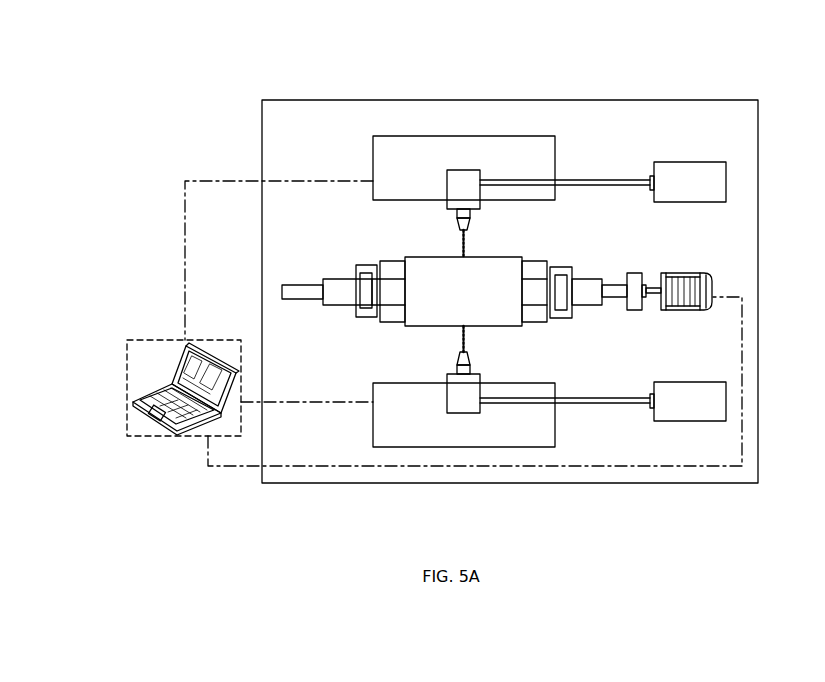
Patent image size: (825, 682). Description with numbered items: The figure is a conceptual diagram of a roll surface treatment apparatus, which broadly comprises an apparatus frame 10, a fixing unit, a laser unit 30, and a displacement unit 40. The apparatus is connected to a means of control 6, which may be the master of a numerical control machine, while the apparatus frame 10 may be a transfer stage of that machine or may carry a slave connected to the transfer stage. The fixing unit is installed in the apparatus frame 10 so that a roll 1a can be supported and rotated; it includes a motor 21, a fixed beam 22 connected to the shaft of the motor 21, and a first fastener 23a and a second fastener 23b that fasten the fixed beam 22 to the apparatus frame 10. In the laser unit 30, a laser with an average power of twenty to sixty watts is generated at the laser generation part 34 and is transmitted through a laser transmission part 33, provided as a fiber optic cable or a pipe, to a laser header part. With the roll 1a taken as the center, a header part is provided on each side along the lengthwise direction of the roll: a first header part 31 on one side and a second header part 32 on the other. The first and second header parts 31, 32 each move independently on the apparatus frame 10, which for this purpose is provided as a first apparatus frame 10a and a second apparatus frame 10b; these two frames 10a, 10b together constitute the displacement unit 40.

The roll 1a is at (503, 263).
The means of control 6 is at (181, 426).
The apparatus frame 10 is at (305, 100).
The first apparatus frame 10a is at (398, 145).
The second apparatus frame 10b is at (397, 440).
The motor 21 is at (713, 287).
The fixed beam 22 is at (345, 295).
The first fastener 23a is at (368, 317).
The second fastener 23b is at (563, 318).
The laser unit 30 is at (653, 52).
The first header part 31 is at (467, 170).
The second header part 32 is at (467, 413).
The laser transmission part 33 is at (589, 180).
The laser generation part 34 is at (694, 172).
The displacement unit 40 is at (427, 61).